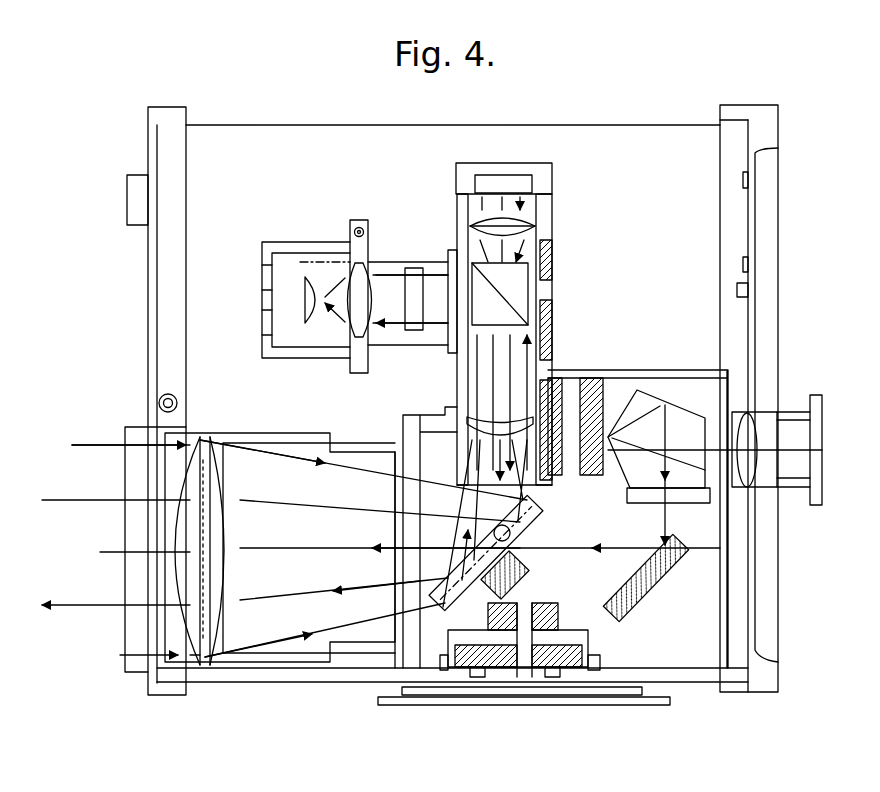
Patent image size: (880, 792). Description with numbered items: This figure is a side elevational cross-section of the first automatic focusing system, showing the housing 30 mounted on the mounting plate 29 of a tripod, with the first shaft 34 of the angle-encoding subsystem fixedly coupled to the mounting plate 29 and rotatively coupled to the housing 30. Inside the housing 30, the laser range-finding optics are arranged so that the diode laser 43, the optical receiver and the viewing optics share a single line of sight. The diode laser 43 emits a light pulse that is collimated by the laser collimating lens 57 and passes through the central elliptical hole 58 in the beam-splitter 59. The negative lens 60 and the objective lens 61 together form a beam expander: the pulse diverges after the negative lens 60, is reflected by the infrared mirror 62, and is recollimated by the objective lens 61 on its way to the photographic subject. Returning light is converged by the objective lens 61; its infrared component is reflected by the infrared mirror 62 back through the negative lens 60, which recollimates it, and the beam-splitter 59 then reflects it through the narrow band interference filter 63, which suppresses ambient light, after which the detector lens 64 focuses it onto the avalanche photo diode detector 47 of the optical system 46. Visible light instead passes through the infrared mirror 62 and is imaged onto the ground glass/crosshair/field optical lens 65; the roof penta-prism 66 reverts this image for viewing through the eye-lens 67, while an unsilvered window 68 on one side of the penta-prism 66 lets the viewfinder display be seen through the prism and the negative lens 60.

The mounting plate 29 is at (585, 707).
The housing 30 is at (622, 123).
The first shaft 34 is at (520, 672).
The diode laser 43 is at (532, 185).
The optical system 46 is at (372, 397).
The avalanche photo diode detector 47 is at (318, 275).
The laser collimating lens 57 is at (536, 230).
The central elliptical hole 58 is at (505, 287).
The beam-splitter 59 is at (536, 287).
The negative lens 60 is at (470, 432).
The objective lens 61 is at (203, 662).
The infrared mirror 62 is at (516, 546).
The narrow band interference filter 63 is at (440, 268).
The detector lens 64 is at (362, 262).
The ground glass/crosshair/field optical lens 65 is at (645, 497).
The roof penta-prism 66 is at (692, 418).
The eye-lens 67 is at (748, 485).
The unsilvered window 68 is at (610, 432).